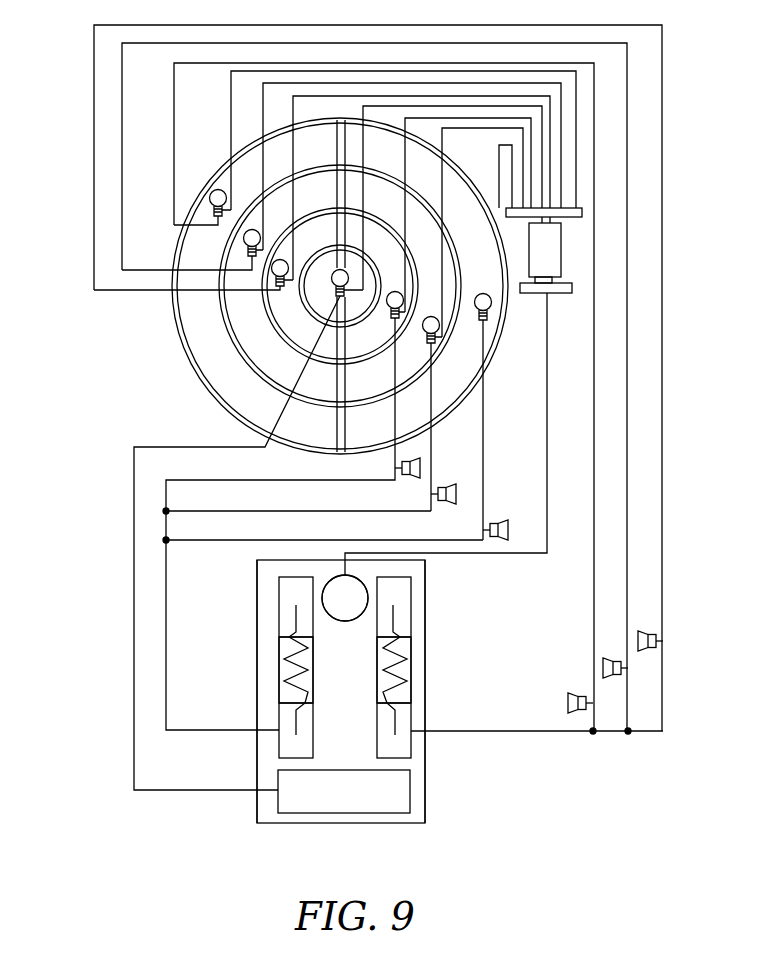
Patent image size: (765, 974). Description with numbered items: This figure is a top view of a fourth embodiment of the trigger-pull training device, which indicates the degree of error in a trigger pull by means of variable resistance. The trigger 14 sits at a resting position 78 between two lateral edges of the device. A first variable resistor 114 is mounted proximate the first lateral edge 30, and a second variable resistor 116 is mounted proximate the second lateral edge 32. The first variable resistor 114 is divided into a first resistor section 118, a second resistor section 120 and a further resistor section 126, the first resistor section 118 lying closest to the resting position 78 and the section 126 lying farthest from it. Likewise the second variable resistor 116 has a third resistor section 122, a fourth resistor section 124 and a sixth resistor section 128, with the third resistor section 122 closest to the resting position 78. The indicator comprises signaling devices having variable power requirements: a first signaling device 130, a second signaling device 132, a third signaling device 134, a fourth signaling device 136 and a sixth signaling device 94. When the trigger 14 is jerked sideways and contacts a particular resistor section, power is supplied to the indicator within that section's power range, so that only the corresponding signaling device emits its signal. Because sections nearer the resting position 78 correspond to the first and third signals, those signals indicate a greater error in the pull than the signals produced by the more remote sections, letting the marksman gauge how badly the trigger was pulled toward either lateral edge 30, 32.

The trigger 14 is at (333, 598).
The first lateral edge 30 is at (257, 798).
The second lateral edge 32 is at (427, 798).
The resting position 78 is at (326, 588).
The sixth signaling device 94 is at (276, 272).
The first variable resistor 114 is at (283, 662).
The second variable resistor 116 is at (402, 677).
The first resistor section 118 is at (283, 613).
The second resistor section 120 is at (283, 683).
The third resistor section 122 is at (403, 602).
The fourth resistor section 124 is at (403, 657).
The fifth resistor section 126 is at (283, 742).
The sixth resistor section 128 is at (398, 742).
The first signaling device 130 is at (488, 306).
The second signaling device 132 is at (437, 325).
The third signaling device 134 is at (212, 192).
The fourth signaling device 136 is at (245, 240).